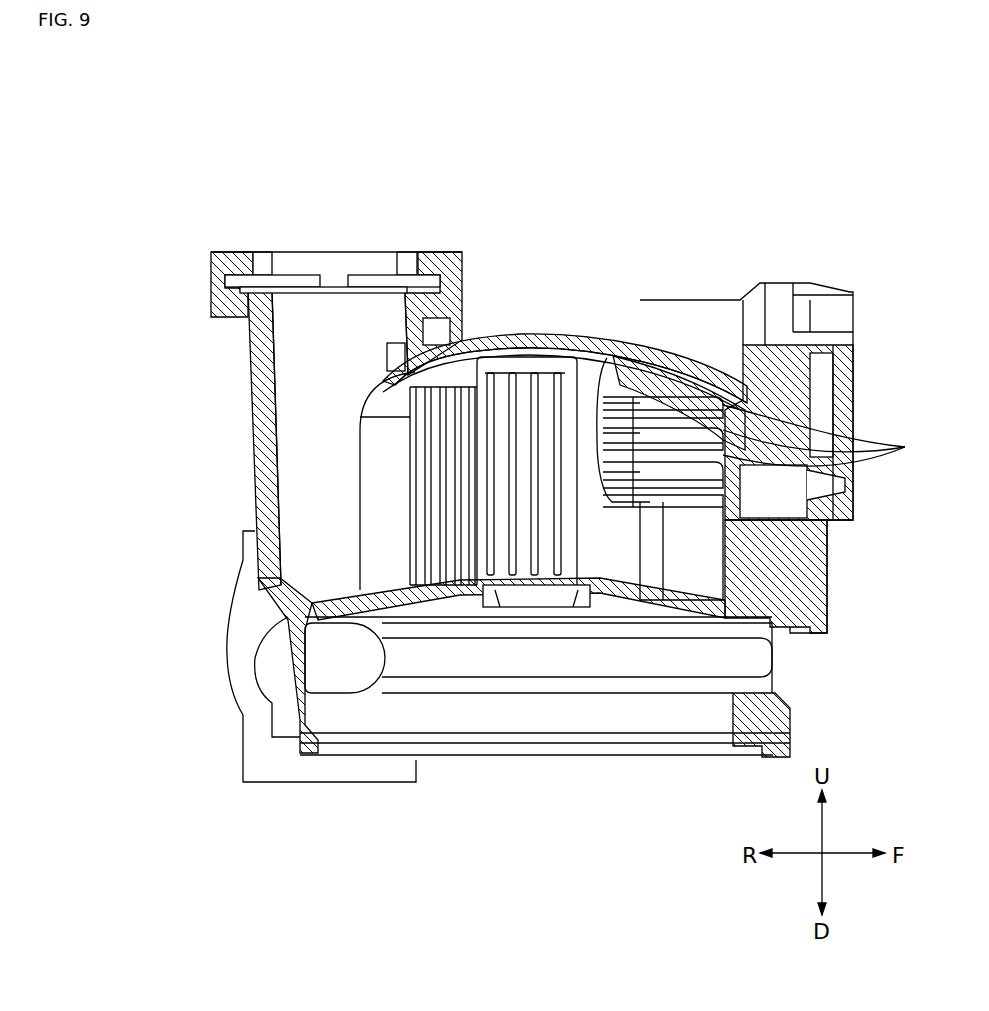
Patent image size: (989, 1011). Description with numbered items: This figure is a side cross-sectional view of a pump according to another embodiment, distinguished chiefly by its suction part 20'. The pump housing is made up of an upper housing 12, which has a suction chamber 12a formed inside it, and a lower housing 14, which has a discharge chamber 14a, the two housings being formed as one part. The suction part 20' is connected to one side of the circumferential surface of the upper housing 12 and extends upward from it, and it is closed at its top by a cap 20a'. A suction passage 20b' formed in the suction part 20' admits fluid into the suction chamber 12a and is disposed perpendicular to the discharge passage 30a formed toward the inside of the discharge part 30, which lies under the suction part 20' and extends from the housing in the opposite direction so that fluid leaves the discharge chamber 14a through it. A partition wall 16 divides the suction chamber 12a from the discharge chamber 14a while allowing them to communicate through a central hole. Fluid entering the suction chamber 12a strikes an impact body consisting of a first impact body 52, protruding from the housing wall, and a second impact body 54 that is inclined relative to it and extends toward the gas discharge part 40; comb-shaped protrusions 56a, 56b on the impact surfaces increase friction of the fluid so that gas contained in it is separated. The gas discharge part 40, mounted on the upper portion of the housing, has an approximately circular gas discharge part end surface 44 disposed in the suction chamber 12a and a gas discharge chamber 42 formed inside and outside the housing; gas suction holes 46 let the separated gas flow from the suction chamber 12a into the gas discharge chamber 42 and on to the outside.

The upper housing 12 is at (572, 337).
The suction chamber 12a is at (392, 521).
The lower housing 14 is at (790, 672).
The discharge chamber 14a is at (530, 705).
The partition wall 16 is at (670, 603).
The suction part 20' is at (263, 421).
The pipe cap 20a' is at (332, 201).
The suction passage 20b' is at (231, 439).
The discharge part 30 is at (242, 658).
The discharge passage 30a is at (350, 657).
The gas discharge part 40 is at (692, 327).
The gas discharge chamber 42 is at (846, 399).
The gas discharge part end surface 44 is at (622, 372).
The gas suction holes 46 is at (830, 435).
The first impact body 52 is at (482, 348).
The second impact body 54 is at (536, 336).
The protrusions 56a is at (438, 516).
The protrusions 56b is at (538, 547).